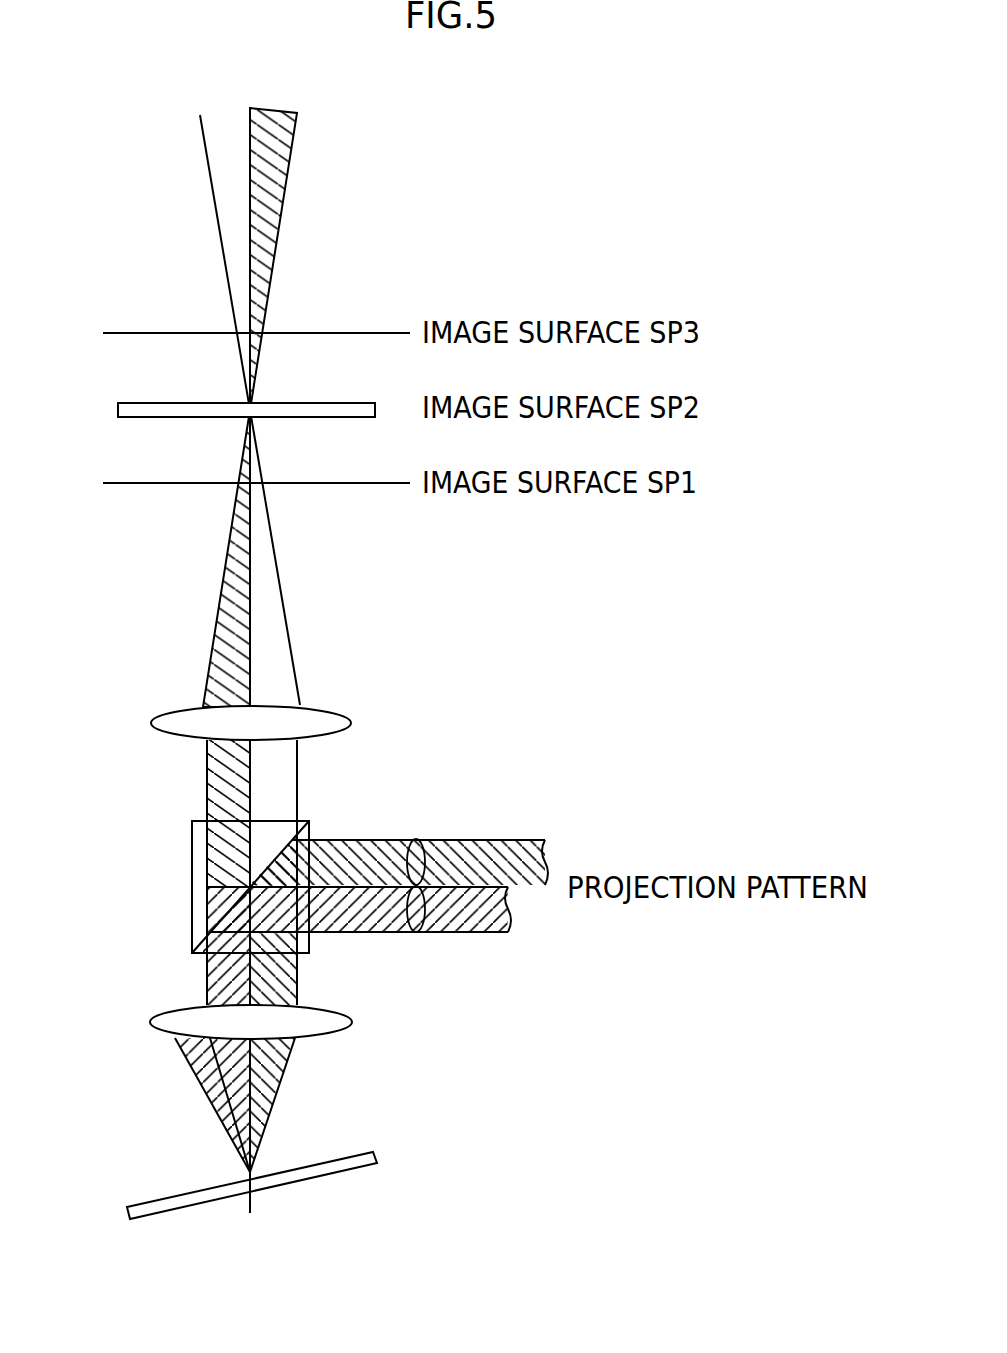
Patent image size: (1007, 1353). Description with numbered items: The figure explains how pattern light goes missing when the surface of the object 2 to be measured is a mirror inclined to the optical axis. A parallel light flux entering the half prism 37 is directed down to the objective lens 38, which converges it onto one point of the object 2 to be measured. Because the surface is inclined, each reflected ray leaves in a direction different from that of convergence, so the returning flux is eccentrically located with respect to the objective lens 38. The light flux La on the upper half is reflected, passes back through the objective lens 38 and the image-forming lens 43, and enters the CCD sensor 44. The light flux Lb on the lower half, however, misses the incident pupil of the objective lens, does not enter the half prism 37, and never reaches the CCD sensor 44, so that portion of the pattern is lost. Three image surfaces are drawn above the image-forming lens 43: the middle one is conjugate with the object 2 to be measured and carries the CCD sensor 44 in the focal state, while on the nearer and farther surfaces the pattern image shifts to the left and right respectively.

The object to be measured 2 is at (378, 1157).
The half prism 37 is at (192, 870).
The objective lens 38 is at (352, 1022).
The image-forming lens 43 is at (152, 722).
The CCD sensor 44 is at (118, 411).
The light flux on the upper half La is at (418, 838).
The light flux on the lower half Lb is at (418, 934).